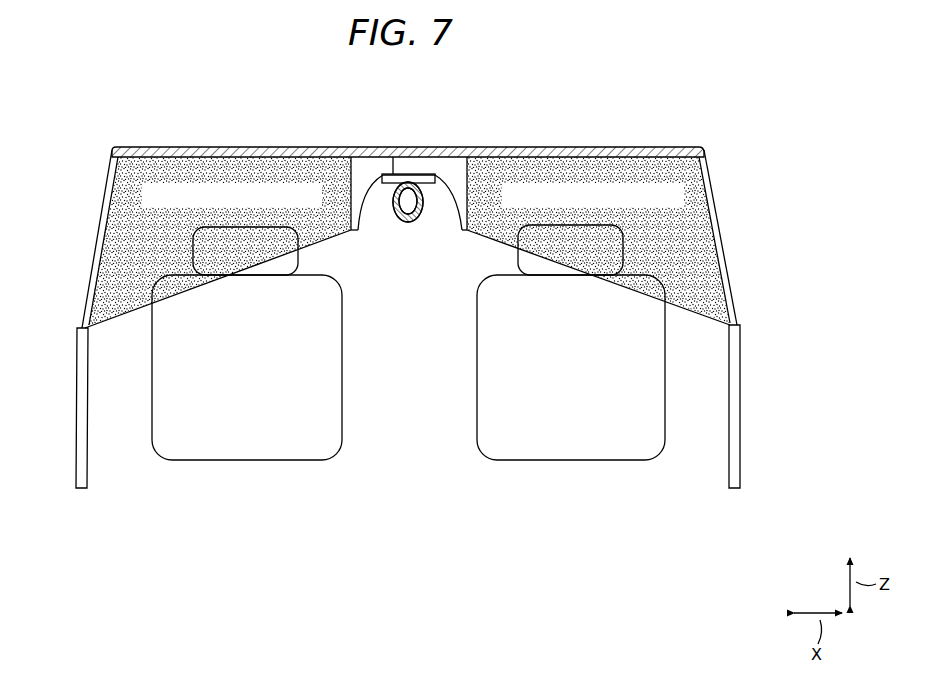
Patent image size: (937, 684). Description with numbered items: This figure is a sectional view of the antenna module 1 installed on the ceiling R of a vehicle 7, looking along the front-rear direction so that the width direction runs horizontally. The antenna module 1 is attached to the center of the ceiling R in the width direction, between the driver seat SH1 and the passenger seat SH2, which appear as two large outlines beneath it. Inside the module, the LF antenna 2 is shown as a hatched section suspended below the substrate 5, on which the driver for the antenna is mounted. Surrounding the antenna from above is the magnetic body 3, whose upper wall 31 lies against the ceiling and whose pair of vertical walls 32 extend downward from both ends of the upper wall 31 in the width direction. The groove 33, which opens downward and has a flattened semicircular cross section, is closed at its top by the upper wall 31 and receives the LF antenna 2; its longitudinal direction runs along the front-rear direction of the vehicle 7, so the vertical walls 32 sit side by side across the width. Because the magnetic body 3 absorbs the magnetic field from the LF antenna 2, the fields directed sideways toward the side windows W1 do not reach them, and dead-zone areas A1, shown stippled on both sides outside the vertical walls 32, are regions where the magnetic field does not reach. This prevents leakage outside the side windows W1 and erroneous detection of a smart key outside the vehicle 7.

The antenna module 1 is at (412, 207).
The LF antenna 2 is at (419, 222).
The magnetic body 3 is at (440, 152).
The substrate 5 is at (393, 174).
The vehicle 7 is at (76, 406).
The upper wall 31 is at (409, 167).
The vertical walls 32 is at (346, 196).
The groove 33 is at (364, 214).
The dead-zone areas A1 is at (130, 174).
The ceiling R is at (580, 152).
The side windows W1 is at (92, 232).
The driver seat SH1 is at (342, 319).
The passenger seat SH2 is at (477, 385).